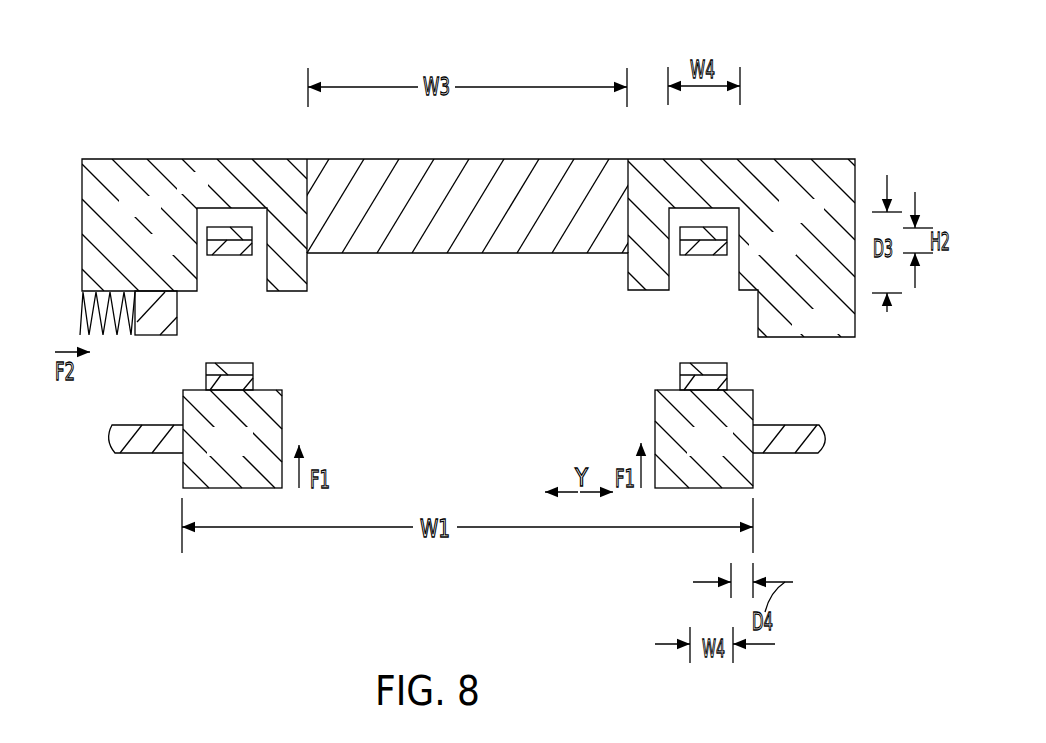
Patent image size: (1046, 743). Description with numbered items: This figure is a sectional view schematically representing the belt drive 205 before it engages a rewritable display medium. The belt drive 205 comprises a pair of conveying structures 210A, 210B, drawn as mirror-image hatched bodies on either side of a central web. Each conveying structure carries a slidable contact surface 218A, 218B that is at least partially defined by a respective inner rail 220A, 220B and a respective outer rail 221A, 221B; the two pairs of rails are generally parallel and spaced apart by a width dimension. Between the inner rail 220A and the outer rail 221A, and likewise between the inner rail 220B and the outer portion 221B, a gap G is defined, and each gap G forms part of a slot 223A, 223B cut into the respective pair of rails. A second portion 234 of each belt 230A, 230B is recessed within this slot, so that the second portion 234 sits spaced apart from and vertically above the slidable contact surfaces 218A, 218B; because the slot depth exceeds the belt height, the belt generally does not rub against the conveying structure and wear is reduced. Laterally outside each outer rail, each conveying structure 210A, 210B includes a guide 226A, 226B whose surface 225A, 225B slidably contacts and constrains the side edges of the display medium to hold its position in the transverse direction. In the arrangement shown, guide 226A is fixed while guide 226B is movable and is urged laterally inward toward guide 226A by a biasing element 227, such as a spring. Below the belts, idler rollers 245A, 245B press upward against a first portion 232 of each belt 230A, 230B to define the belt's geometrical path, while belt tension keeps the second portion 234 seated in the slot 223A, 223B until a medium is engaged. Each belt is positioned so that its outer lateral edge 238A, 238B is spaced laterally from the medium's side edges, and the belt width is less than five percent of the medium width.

The belt drive 205 is at (268, 78).
The conveying structure 210B is at (95, 148).
The conveying structure 210A is at (823, 151).
The slidable contact surface 218B is at (330, 290).
The slidable contact surface 218A is at (618, 296).
The inner rail 220B is at (292, 294).
The inner rail 220A is at (642, 292).
The outer portion 221B is at (186, 288).
The outer rail 221A is at (742, 237).
The slot 223B is at (196, 232).
The slot 223A is at (700, 208).
The surface 225B is at (177, 320).
The surface 225A is at (758, 318).
The guide 226B is at (161, 325).
The guide 226A is at (835, 331).
The biasing element 227 is at (80, 322).
The belt 230B is at (228, 225).
The belt 230A is at (733, 228).
The first portion 232 is at (253, 369).
The second portion 234 is at (226, 240).
The outer lateral edge 238B is at (190, 375).
The outer lateral edge 238A is at (753, 372).
The idler roller 245B is at (249, 452).
The idler roller 245A is at (730, 452).
The gap G is at (241, 272).